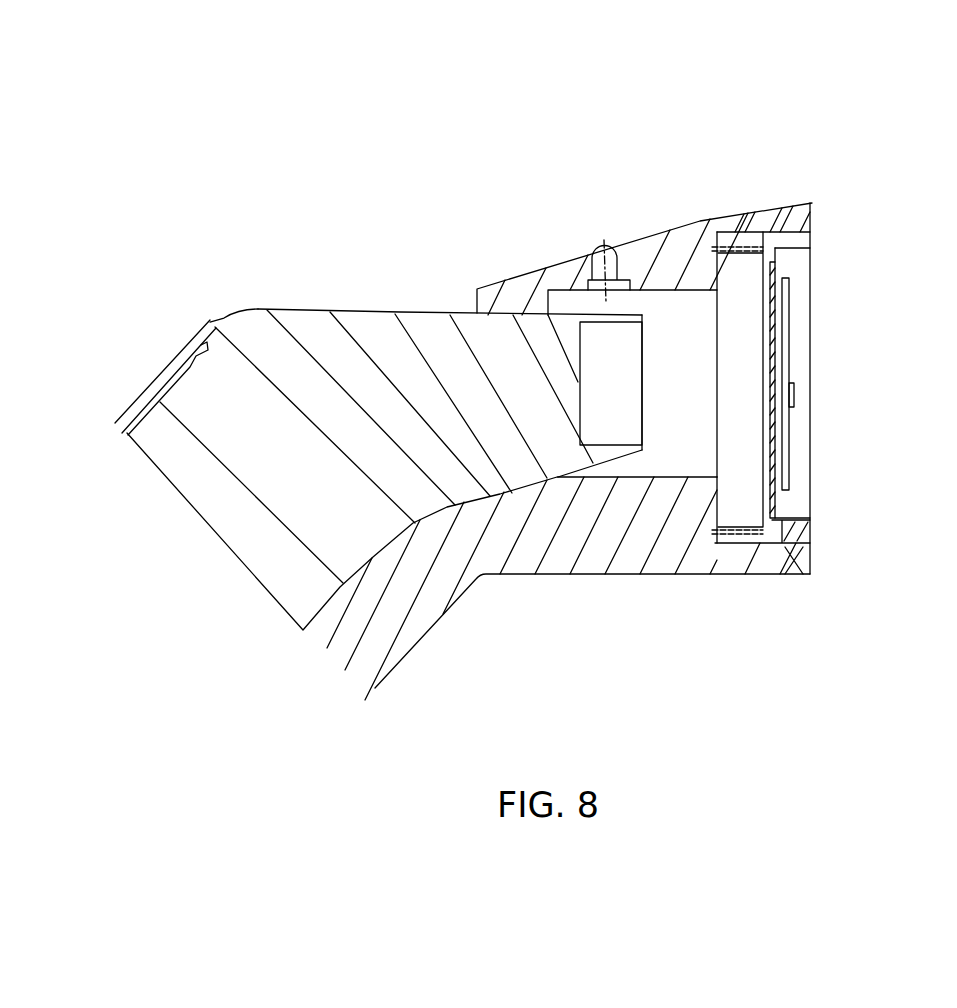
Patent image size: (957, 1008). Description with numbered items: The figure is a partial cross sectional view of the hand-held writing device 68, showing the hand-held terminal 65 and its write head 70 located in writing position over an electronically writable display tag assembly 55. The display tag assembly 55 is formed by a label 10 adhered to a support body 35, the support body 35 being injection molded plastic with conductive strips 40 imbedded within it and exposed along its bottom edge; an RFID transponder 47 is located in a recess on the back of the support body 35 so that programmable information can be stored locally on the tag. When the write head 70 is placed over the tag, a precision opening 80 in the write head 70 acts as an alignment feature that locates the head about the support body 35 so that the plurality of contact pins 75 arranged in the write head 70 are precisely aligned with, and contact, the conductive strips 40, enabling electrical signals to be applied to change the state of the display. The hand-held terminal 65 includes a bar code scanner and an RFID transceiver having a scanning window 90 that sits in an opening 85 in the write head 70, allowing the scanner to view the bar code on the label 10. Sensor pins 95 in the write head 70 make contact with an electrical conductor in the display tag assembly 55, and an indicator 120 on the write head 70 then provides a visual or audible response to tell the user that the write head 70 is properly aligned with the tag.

The label 10 is at (762, 398).
The support body 35 is at (813, 243).
The conductive strips 40 is at (772, 540).
The RFID transponder 47 is at (790, 345).
The display tag assembly 55 is at (803, 530).
The hand-held terminal 65 is at (312, 307).
The hand-held writing device 68 is at (179, 279).
The write head 70 is at (607, 573).
The contact pins 75 is at (730, 537).
The precision opening 80 is at (752, 253).
The opening 85 is at (665, 305).
The scanning window 90 is at (552, 313).
The sensor pins 95 is at (733, 250).
The indicator 120 is at (618, 302).